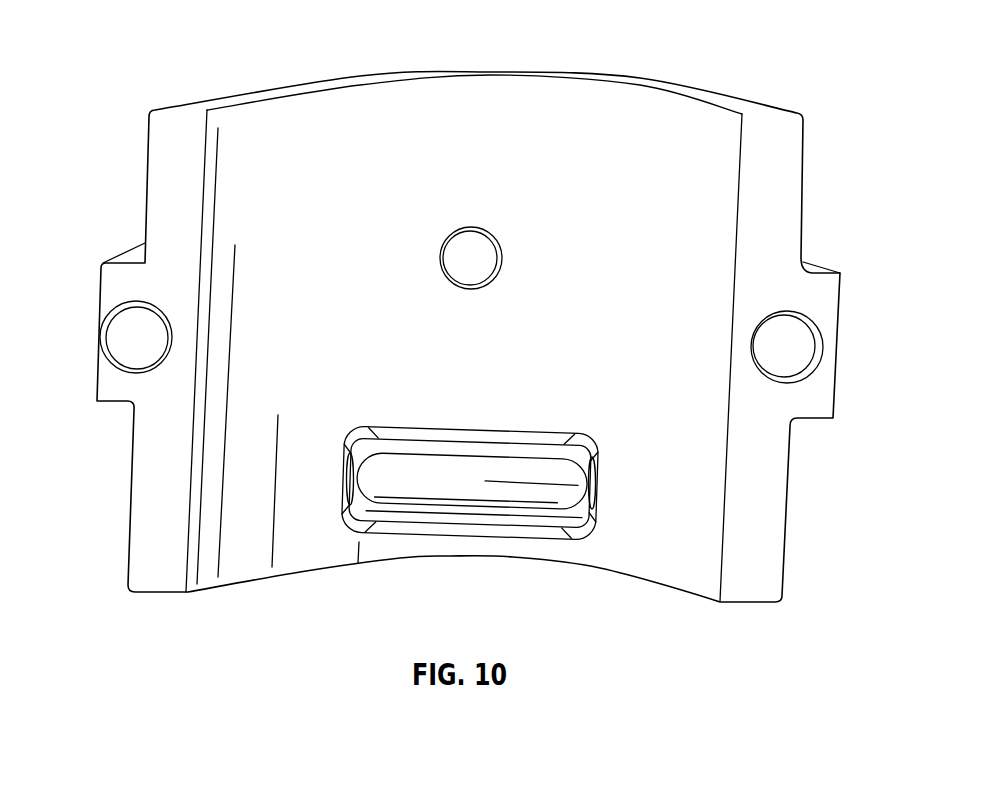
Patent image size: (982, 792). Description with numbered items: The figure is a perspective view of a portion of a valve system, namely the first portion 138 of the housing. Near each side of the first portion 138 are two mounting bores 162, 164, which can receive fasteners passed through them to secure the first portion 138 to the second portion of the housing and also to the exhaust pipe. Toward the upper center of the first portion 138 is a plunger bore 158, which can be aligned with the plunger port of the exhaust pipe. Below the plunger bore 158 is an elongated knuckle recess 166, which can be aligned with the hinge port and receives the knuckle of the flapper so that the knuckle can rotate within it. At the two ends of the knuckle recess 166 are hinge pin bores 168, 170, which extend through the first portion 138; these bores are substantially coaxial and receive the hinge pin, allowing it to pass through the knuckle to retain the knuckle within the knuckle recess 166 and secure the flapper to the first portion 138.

The first portion 138 is at (158, 47).
The plunger bore 158 is at (472, 228).
The mounting bore 162 is at (130, 363).
The mounting bore 164 is at (800, 372).
The knuckle recess 166 is at (473, 535).
The hinge pin bore 168 is at (346, 479).
The hinge pin bore 170 is at (595, 492).